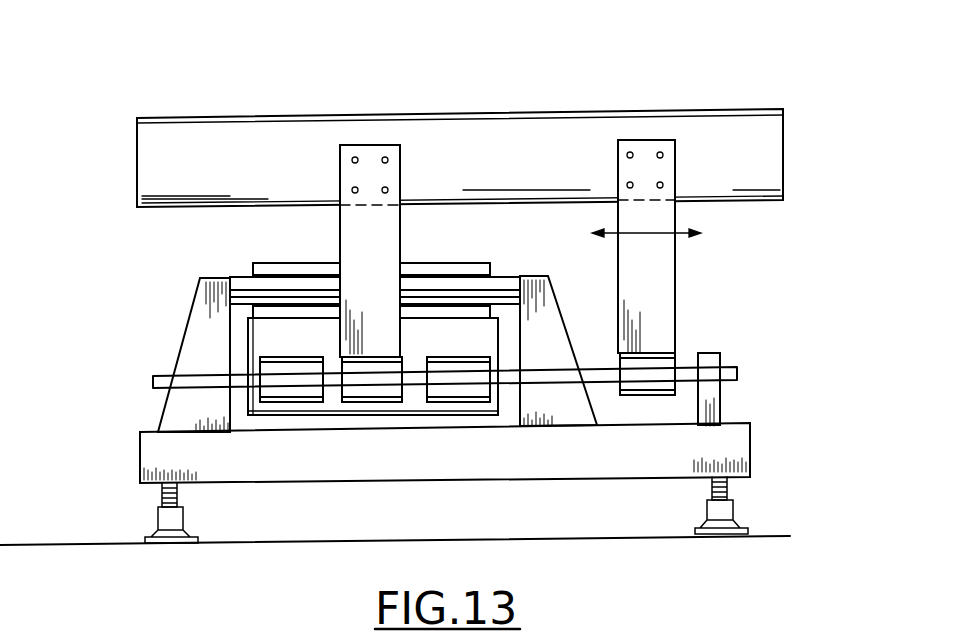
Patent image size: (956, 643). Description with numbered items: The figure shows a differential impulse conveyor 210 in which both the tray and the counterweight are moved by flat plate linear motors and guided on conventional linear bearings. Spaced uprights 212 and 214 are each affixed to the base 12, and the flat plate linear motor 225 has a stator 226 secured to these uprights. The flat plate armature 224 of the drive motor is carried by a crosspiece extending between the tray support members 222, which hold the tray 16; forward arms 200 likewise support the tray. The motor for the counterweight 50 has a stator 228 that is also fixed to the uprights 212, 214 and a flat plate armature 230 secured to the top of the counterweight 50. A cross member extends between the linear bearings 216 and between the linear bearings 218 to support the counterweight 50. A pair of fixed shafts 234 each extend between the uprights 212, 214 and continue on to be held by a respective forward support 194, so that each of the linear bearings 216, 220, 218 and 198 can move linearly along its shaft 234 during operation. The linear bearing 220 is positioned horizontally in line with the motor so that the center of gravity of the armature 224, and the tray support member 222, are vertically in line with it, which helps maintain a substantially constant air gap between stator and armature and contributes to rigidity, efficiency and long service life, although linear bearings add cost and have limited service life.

The differential impulse conveyor 210 is at (253, 107).
The tray support member 222 is at (368, 218).
The flat plate linear motor 225 is at (422, 244).
The tray 16 is at (717, 174).
The flat plate armature 224 is at (292, 268).
The stator 226 is at (275, 288).
The stator 228 is at (250, 300).
The flat plate armature 230 is at (273, 310).
The upright 214 is at (567, 320).
The forward arm 200 is at (653, 252).
The linear bearing 198 is at (658, 367).
The forward support 194 is at (715, 404).
The upright 212 is at (187, 408).
The counterweight 50 is at (250, 405).
The base 12 is at (355, 469).
The linear bearing 216 is at (287, 395).
The linear bearing 220 is at (372, 387).
The linear bearing 218 is at (467, 398).
The fixed shaft 234 is at (600, 383).